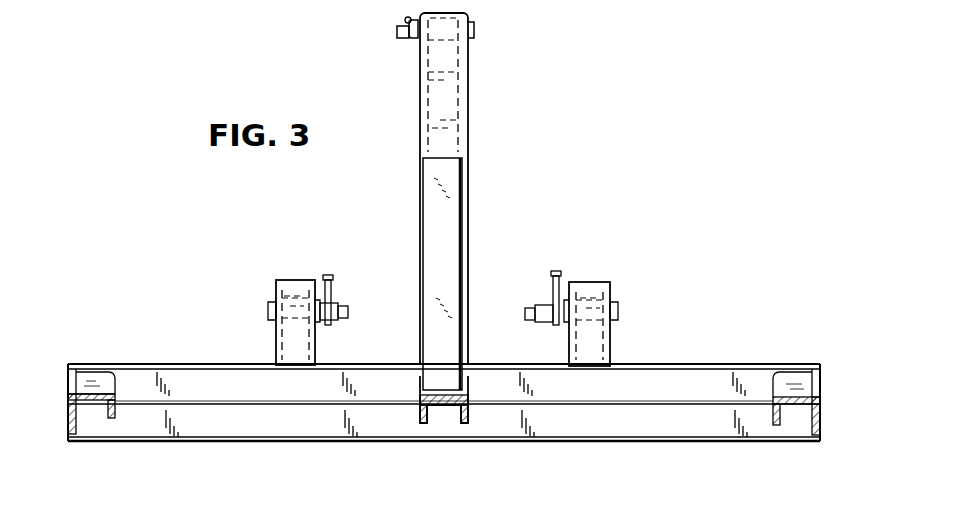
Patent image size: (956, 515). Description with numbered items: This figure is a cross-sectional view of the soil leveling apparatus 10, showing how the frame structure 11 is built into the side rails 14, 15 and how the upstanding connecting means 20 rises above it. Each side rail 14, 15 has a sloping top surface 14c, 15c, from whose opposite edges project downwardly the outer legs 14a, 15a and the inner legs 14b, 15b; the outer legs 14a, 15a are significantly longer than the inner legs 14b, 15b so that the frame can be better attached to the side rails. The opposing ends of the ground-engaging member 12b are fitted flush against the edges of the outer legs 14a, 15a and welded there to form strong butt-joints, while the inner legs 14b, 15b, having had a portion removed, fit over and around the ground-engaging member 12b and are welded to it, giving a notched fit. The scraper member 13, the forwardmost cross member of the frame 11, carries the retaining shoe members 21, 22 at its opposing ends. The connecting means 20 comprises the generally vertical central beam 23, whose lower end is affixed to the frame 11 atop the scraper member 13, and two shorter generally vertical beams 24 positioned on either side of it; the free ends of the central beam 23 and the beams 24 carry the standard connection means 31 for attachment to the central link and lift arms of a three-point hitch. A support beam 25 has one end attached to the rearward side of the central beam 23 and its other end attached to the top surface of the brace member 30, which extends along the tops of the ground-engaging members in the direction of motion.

The soil leveling apparatus 10 is at (572, 180).
The frame structure 11 is at (708, 364).
The ground-engaging member 12b is at (272, 420).
The scraper member 13 is at (194, 376).
The side rail 14 is at (110, 400).
The outer leg 14a is at (68, 430).
The inner leg 14b is at (115, 416).
The sloping top surface 14c is at (97, 382).
The side rail 15 is at (776, 411).
The outer leg 15a is at (819, 434).
The inner leg 15b is at (776, 426).
The sloping top surface 15c is at (790, 380).
The connecting means 20 is at (436, 218).
The retaining shoe member 21 is at (821, 374).
The retaining shoe member 22 is at (71, 372).
The central beam 23 is at (455, 122).
The shorter beam 24 is at (292, 343).
The support beam 25 is at (456, 262).
The brace member 30 is at (423, 391).
The standard connection means 31 is at (398, 38).